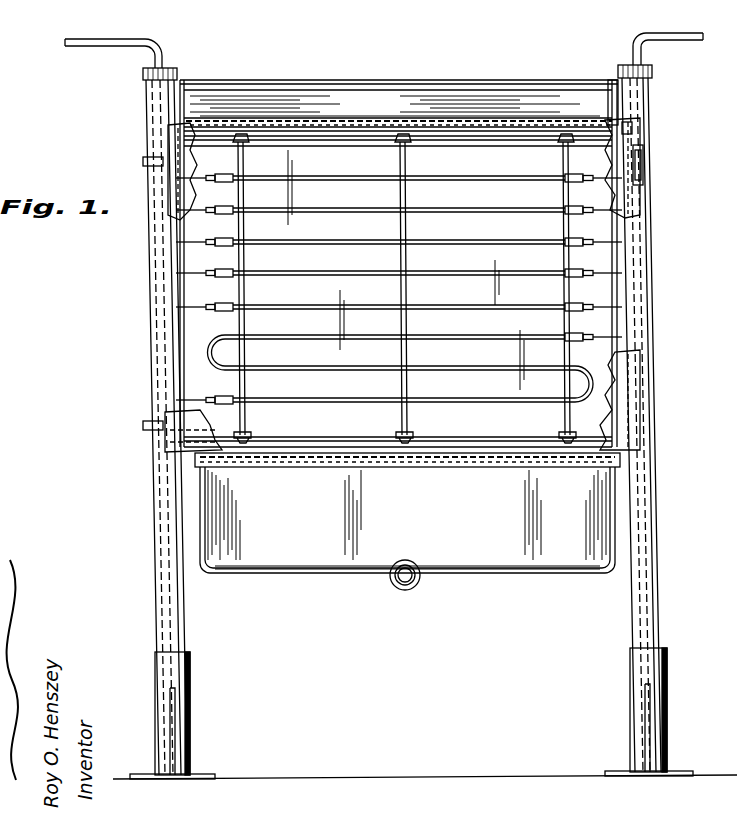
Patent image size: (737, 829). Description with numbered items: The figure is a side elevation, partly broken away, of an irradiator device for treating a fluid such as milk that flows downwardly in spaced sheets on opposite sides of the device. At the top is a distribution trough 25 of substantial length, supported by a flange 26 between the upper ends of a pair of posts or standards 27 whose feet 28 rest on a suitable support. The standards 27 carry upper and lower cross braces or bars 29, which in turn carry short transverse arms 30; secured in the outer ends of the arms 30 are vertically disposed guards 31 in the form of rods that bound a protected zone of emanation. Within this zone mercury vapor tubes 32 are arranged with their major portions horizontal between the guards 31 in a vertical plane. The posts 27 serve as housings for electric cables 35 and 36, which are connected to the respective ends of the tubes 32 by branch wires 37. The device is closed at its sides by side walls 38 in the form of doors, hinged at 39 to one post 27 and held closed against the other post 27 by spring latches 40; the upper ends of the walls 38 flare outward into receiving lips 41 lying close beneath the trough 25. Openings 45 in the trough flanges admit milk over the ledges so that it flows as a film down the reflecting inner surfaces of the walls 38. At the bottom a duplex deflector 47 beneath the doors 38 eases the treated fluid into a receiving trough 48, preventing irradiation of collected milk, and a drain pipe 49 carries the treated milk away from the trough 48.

The distribution trough 25 is at (563, 86).
The flange 26 is at (609, 80).
The post 27 is at (152, 103).
The foot 28 is at (190, 724).
The cross brace 29 is at (327, 141).
The arm 30 is at (252, 147).
The guard 31 is at (246, 387).
The mercury vapor tube 32 is at (516, 256).
The electric cable 35 is at (97, 48).
The electric cable 36 is at (695, 34).
The branch wire 37 is at (190, 242).
The side wall 38 is at (193, 228).
The hinge 39 is at (643, 158).
The spring latch 40 is at (145, 160).
The receiving lip 41 is at (626, 126).
The opening 45 is at (355, 125).
The deflector 47 is at (467, 447).
The receiving trough 48 is at (572, 563).
The drain pipe 49 is at (418, 580).